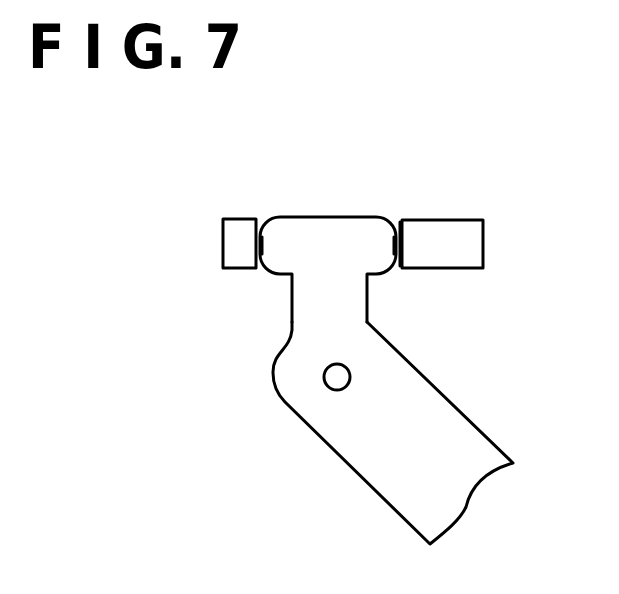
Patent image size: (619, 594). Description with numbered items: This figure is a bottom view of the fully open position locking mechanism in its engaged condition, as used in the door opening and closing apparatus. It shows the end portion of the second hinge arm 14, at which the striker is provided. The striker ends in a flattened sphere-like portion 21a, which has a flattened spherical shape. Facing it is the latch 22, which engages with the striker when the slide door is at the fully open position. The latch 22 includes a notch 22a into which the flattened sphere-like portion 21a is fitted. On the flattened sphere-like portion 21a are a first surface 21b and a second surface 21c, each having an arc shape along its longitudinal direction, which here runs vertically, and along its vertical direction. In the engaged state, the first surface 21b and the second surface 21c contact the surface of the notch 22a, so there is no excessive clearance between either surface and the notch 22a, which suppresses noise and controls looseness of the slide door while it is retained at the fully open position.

The second hinge arm 14 is at (345, 444).
The flattened sphere-like portion 21a is at (328, 210).
The first surface 21b is at (257, 246).
The second surface 21c is at (402, 247).
The latch 22 is at (460, 242).
The notch 22a is at (398, 234).